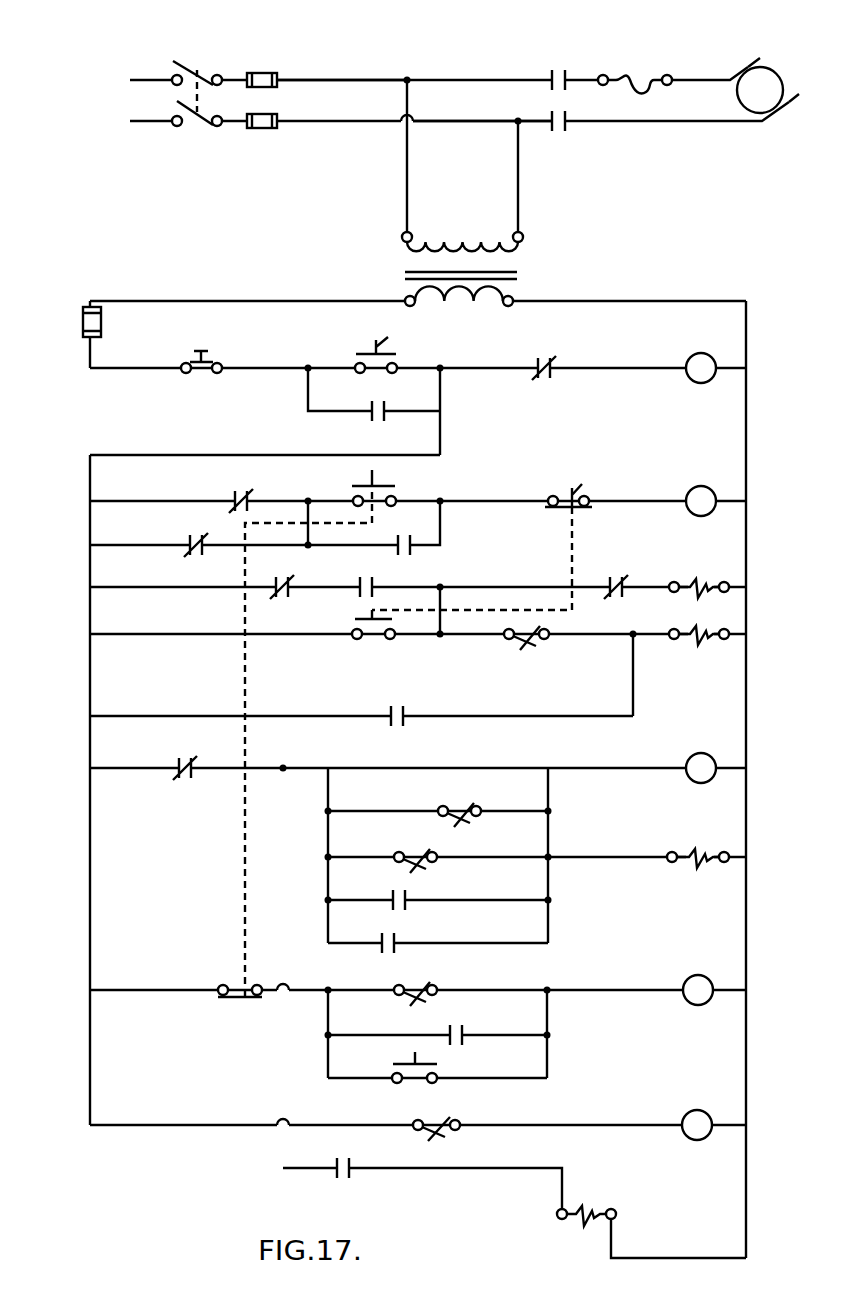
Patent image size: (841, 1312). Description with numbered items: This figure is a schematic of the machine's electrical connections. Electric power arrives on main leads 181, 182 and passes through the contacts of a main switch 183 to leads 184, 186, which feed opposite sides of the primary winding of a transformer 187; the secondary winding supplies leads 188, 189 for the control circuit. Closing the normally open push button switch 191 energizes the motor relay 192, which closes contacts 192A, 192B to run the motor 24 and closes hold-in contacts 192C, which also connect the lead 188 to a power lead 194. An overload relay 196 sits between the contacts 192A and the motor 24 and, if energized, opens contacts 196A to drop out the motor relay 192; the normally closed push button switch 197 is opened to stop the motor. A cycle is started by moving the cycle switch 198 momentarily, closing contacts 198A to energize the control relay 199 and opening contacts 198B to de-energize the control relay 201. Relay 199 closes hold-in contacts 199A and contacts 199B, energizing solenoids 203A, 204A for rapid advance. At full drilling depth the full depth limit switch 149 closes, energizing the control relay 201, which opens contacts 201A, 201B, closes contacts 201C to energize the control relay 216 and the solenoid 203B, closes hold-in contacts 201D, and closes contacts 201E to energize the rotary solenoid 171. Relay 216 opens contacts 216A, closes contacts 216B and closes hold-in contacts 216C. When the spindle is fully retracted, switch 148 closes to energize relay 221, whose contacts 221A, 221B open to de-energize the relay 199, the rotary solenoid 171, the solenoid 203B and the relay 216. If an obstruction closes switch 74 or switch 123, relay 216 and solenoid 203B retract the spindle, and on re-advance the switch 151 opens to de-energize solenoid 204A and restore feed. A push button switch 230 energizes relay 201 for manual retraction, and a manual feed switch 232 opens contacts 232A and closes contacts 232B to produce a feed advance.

The motor 24 is at (763, 74).
The switch 74 is at (458, 818).
The switch 123 is at (410, 856).
The limit switch 148 is at (445, 1136).
The full depth limit switch 149 is at (424, 988).
The switch 151 is at (528, 641).
The rotary solenoid 171 is at (584, 1210).
The main lead 181 is at (135, 123).
The main lead 182 is at (135, 79).
The main switch 183 is at (207, 80).
The lead 184 is at (462, 79).
The lead 186 is at (447, 124).
The transformer 187 is at (508, 272).
The lead 188 is at (140, 299).
The lead 189 is at (748, 322).
The normally open push button switch 191 is at (388, 349).
The motor relay 192 is at (700, 384).
The contacts 192A is at (566, 72).
The contacts 192B is at (568, 125).
The hold-in contacts 192C is at (370, 417).
The power lead 194 is at (88, 480).
The overload relay 196 is at (640, 80).
The contacts 196A is at (554, 369).
The normally closed push button switch 197 is at (204, 354).
The cycle switch 198 is at (244, 676).
The contacts 198A is at (373, 479).
The contacts 198B is at (236, 999).
The control relay 199 is at (700, 517).
The hold-in contacts 199A is at (413, 551).
The contacts 199B is at (358, 596).
The control relay 201 is at (698, 975).
The contacts 201A is at (187, 550).
The contacts 201B is at (293, 591).
The contacts 201C is at (400, 944).
The hold-in contacts 201D is at (465, 1036).
The contacts 201E is at (330, 1176).
The solenoid 203A is at (704, 590).
The solenoid 203B is at (694, 855).
The solenoid 204A is at (704, 635).
The control relay 216 is at (700, 752).
The contacts 216A is at (616, 586).
The contacts 216B is at (404, 716).
The hold-in contacts 216C is at (468, 900).
The relay 221 is at (692, 1110).
The contacts 221A is at (253, 499).
The contacts 221B is at (181, 775).
The manually operated normally open push button switch 230 is at (430, 1064).
The manual feed switch 232 is at (568, 542).
The contacts 232A is at (580, 491).
The contacts 232B is at (372, 643).